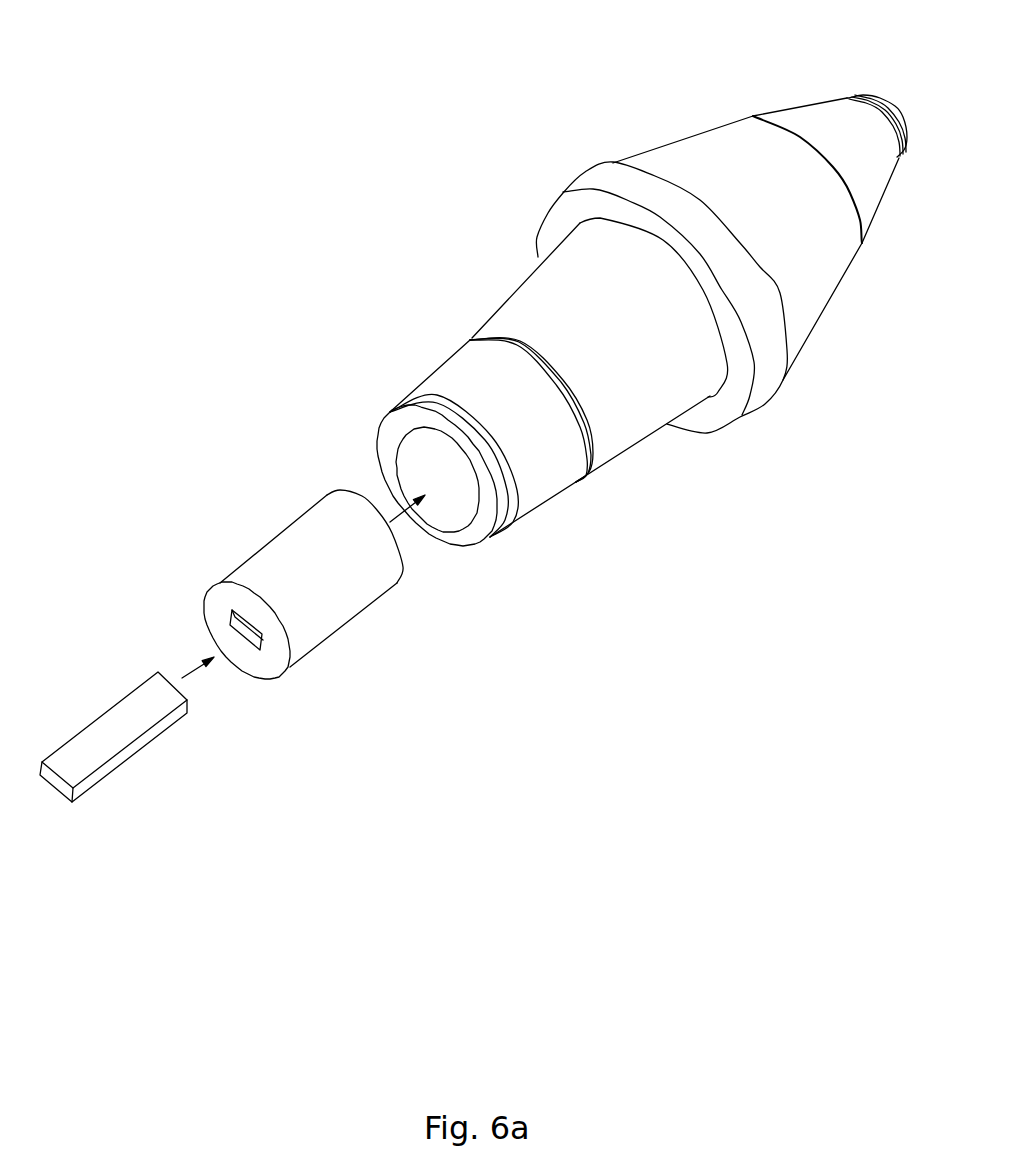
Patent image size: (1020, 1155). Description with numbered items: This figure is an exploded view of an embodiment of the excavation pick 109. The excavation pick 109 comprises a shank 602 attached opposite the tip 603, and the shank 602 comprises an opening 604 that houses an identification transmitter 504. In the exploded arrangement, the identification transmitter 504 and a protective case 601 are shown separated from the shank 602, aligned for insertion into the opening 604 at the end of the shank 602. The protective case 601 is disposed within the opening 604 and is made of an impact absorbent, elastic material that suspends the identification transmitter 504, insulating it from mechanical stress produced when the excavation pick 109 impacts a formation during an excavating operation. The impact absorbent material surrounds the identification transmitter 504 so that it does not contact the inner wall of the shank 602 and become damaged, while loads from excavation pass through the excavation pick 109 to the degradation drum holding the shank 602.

The excavation pick 109 is at (615, 349).
The identification transmitter 504 is at (117, 738).
The protective case 601 is at (302, 567).
The shank 602 is at (485, 390).
The tip 603 is at (887, 108).
The opening 604 is at (458, 497).